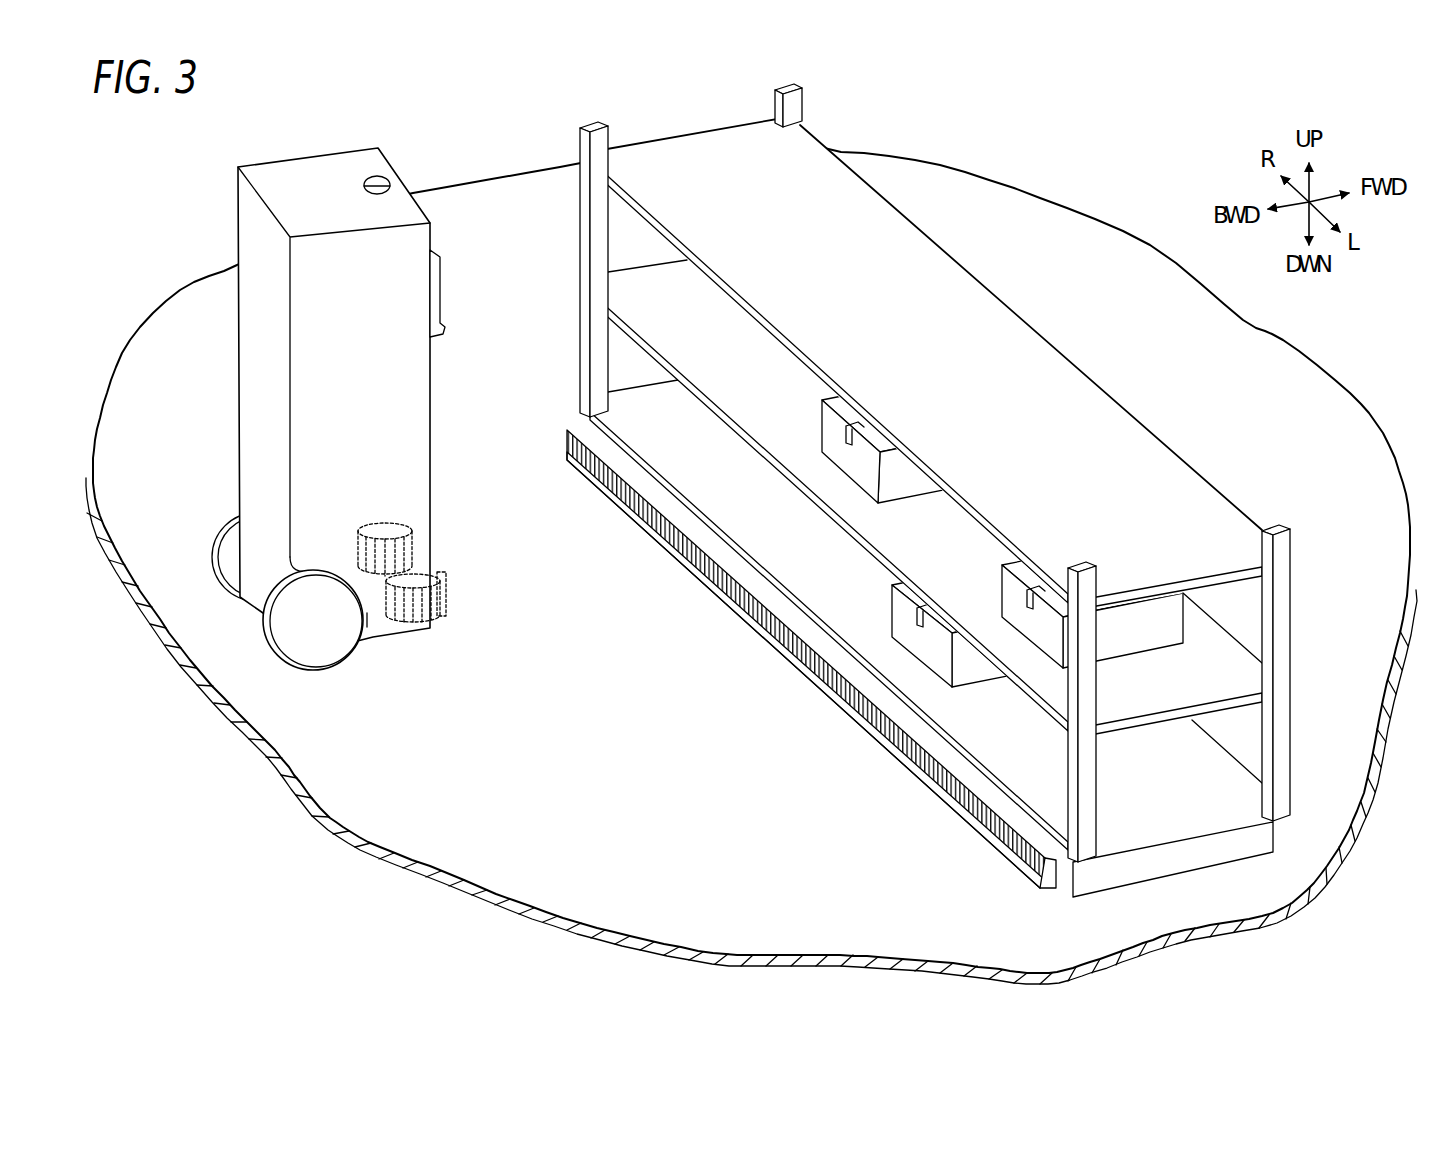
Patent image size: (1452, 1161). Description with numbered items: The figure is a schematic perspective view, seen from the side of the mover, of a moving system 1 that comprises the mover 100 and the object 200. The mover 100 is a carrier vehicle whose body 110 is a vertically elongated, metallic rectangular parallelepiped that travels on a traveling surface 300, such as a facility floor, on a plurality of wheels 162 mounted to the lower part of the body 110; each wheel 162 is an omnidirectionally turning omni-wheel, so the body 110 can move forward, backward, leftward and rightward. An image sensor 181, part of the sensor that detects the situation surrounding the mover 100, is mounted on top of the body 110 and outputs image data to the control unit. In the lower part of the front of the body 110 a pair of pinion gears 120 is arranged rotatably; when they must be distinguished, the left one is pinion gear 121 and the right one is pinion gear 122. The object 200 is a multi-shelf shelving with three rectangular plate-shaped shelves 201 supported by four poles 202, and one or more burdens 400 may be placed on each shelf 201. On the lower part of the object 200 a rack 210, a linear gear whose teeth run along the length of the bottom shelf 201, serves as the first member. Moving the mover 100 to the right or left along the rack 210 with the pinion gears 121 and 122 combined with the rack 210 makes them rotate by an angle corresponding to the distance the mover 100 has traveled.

The moving system 1 is at (523, 103).
The mover 100 is at (365, 408).
The body 110 is at (253, 350).
The pinion gear 120 is at (464, 594).
The pinion gear 121 is at (443, 613).
The pinion gear 122 is at (417, 543).
The wheel 162 is at (256, 557).
The image sensor 181 is at (362, 188).
The object 200 is at (917, 490).
The shelf 201 is at (1127, 447).
The pole 202 is at (1282, 628).
The rack 210 is at (940, 776).
The traveling surface 300 is at (364, 798).
The burden 400 is at (900, 477).